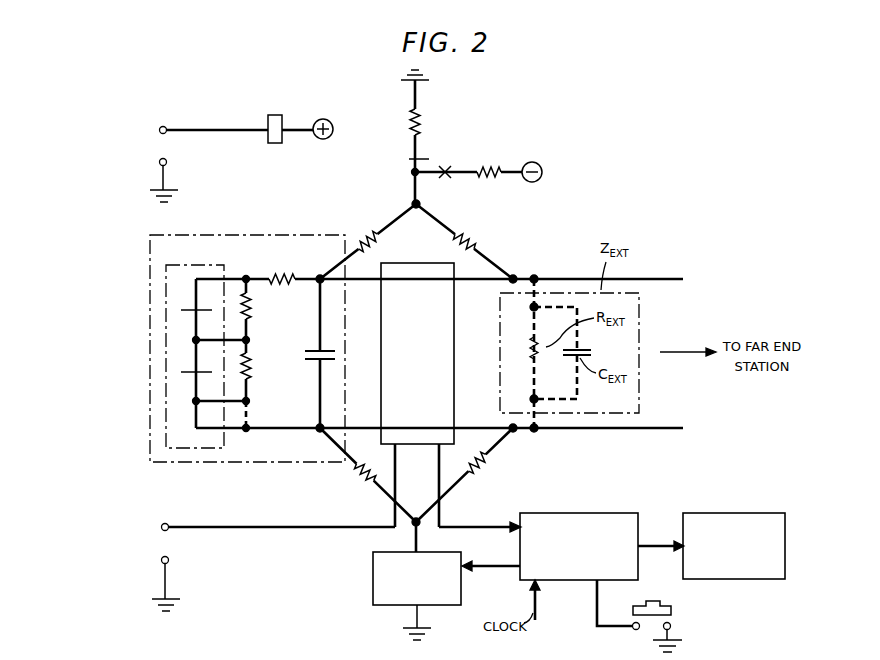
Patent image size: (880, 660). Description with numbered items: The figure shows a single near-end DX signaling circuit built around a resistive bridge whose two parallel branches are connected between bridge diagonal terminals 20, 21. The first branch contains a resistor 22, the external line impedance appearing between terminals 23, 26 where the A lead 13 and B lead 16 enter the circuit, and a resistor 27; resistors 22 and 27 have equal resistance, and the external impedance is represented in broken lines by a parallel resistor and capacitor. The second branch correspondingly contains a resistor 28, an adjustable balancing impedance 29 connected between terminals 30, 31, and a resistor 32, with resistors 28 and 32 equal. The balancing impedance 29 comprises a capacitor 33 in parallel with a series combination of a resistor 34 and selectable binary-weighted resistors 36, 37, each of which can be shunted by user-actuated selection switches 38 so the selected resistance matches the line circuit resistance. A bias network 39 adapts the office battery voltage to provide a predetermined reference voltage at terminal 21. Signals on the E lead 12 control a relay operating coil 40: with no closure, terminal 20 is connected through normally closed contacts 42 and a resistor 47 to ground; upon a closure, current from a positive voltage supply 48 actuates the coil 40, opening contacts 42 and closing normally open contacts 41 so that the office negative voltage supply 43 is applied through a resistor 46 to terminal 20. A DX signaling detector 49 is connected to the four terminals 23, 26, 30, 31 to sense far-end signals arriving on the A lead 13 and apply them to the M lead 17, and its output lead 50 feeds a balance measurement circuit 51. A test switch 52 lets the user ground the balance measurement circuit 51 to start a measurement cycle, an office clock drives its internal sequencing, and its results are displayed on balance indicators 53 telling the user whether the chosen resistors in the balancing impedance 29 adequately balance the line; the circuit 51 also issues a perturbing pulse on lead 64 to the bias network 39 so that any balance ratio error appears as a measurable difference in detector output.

The E lead 12 is at (188, 128).
The relay operating coil 40 is at (274, 115).
The positive voltage supply 48 is at (307, 113).
The resistor 47 is at (404, 122).
The normally closed contacts 42 is at (409, 159).
The normally open contacts 41 is at (447, 161).
The resistor 46 is at (489, 160).
The office negative voltage supply 43 is at (542, 172).
The bridge diagonal terminal 20 is at (412, 203).
The resistor 28 is at (368, 241).
The resistor 22 is at (464, 241).
The bridge terminal 23 is at (513, 275).
The A lead 13 is at (661, 278).
The B lead 16 is at (661, 429).
The adjustable balancing impedance 29 is at (262, 235).
The user-actuated selection switches 38 is at (173, 335).
The resistor 34 is at (282, 268).
The selectable resistor 36 is at (256, 310).
The selectable resistor 37 is at (256, 386).
The capacitor 33 is at (315, 353).
The bridge terminal 30 is at (321, 276).
The bridge terminal 31 is at (318, 425).
The DX signaling detector 49 is at (455, 350).
The bridge terminal 26 is at (515, 431).
The resistor 32 is at (368, 475).
The resistor 27 is at (464, 475).
The bridge diagonal terminal 21 is at (417, 518).
The M lead 17 is at (186, 525).
The output lead 50 is at (443, 518).
The bias network 39 is at (372, 577).
The balance measurement circuit 51 is at (616, 513).
The PERT lead 64 is at (500, 564).
The balance indicators 53 is at (758, 513).
The test switch 52 is at (676, 604).